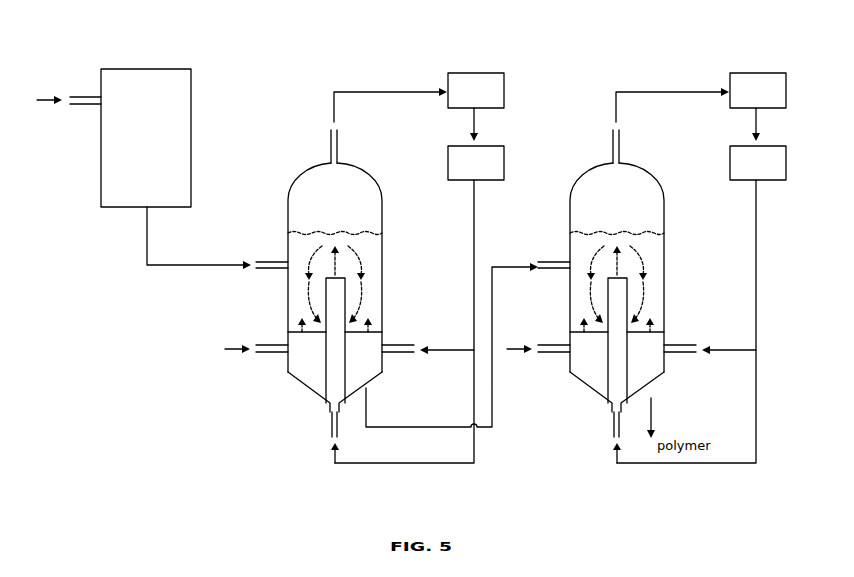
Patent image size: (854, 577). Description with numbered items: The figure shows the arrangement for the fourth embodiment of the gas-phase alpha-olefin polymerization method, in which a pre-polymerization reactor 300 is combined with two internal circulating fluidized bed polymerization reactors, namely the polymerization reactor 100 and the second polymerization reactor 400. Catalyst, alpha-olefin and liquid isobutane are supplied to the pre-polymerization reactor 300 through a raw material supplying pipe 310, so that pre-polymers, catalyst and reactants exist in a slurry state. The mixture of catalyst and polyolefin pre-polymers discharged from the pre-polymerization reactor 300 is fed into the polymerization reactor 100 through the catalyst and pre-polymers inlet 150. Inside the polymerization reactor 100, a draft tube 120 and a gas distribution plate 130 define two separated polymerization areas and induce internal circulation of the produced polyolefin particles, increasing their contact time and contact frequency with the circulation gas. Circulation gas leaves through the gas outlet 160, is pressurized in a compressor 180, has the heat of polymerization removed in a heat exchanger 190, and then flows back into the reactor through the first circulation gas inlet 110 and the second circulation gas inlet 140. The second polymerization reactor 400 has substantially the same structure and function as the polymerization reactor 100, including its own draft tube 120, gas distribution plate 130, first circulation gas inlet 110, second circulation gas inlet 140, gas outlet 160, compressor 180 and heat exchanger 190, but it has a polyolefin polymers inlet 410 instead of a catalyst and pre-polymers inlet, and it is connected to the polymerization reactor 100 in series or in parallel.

The internal circulating fluidized bed polymerization reactor 100 is at (292, 158).
The first circulation gas inlet 110 is at (332, 430).
The draft tube 120 is at (337, 300).
The gas distribution plate 130 is at (385, 329).
The second circulation gas inlet 140 is at (272, 347).
The catalyst and pre-polymers inlet 150 is at (272, 262).
The gas outlet 160 is at (340, 150).
The compressor 180 is at (492, 73).
The heat exchanger 190 is at (492, 146).
The pre-polymerization reactor 300 is at (172, 46).
The raw material supplying pipe 310 is at (92, 92).
The second polymerization reactor 400 is at (604, 262).
The polyolefin polymers inlet 410 is at (547, 244).